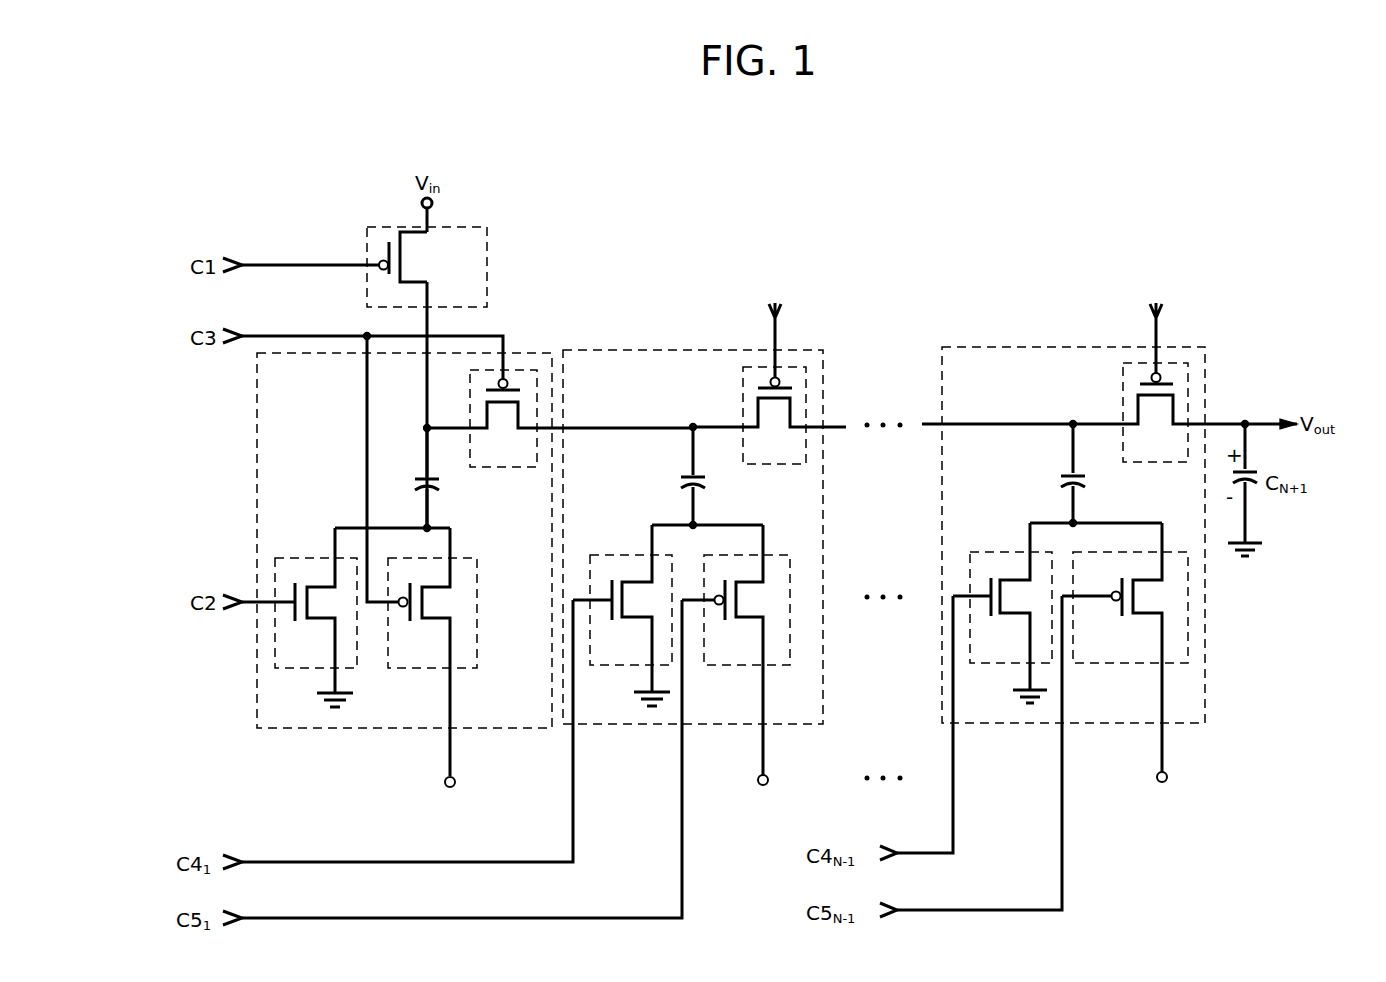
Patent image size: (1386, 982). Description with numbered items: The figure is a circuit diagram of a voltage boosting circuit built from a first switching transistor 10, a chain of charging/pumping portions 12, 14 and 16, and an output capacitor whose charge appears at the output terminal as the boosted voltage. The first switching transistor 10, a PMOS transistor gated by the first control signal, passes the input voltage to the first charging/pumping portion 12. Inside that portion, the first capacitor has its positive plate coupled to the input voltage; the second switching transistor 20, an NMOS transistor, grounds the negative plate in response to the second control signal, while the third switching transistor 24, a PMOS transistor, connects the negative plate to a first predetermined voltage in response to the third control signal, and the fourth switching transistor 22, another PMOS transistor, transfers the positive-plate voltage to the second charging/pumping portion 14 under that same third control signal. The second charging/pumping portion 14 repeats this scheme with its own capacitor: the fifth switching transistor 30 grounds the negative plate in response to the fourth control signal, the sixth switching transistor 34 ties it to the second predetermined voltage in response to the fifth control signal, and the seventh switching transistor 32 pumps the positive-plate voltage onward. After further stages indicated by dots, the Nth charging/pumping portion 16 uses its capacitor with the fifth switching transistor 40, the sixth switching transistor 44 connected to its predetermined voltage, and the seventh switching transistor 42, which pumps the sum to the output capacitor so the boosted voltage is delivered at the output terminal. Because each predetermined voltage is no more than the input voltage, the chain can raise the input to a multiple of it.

The first switching transistor 10 is at (487, 265).
The first charging/pumping portion 12 is at (362, 730).
The second charging/pumping portion 14 is at (637, 728).
The Nth charging/pumping portion 16 is at (1010, 727).
The second switching transistor 20 is at (308, 556).
The fourth switching transistor 22 is at (508, 470).
The third switching transistor 24 is at (477, 622).
The fifth switching transistor 30 is at (622, 553).
The seventh switching transistor 32 is at (780, 466).
The sixth switching transistor 34 is at (747, 667).
The fifth switching transistor 40 is at (990, 552).
The seventh switching transistor 42 is at (1165, 465).
The sixth switching transistor 44 is at (1120, 665).